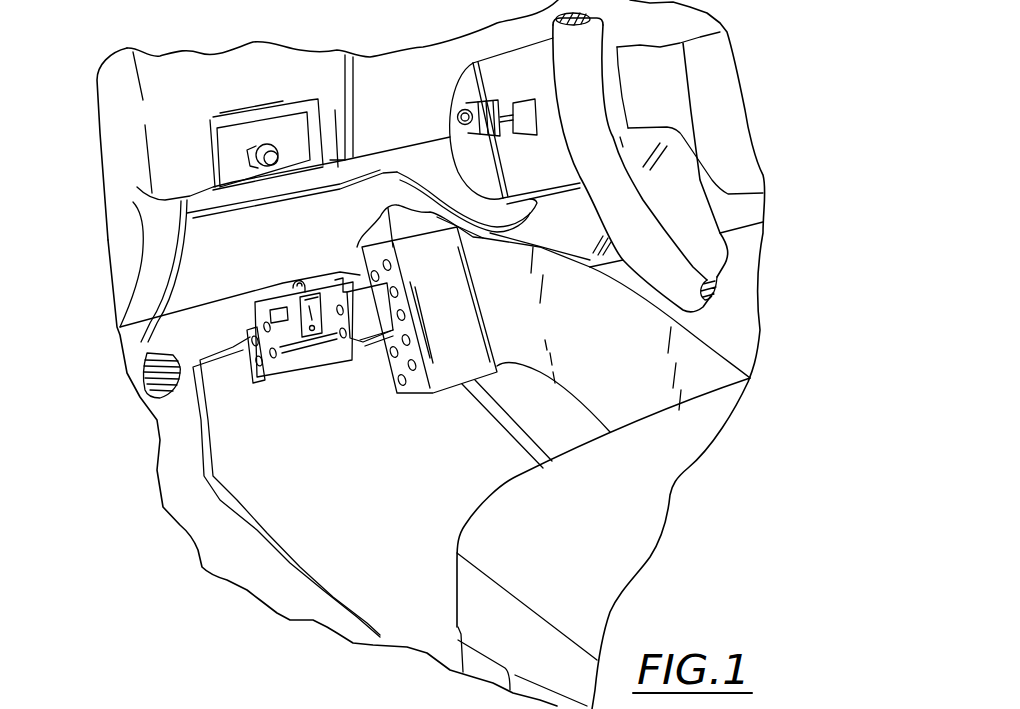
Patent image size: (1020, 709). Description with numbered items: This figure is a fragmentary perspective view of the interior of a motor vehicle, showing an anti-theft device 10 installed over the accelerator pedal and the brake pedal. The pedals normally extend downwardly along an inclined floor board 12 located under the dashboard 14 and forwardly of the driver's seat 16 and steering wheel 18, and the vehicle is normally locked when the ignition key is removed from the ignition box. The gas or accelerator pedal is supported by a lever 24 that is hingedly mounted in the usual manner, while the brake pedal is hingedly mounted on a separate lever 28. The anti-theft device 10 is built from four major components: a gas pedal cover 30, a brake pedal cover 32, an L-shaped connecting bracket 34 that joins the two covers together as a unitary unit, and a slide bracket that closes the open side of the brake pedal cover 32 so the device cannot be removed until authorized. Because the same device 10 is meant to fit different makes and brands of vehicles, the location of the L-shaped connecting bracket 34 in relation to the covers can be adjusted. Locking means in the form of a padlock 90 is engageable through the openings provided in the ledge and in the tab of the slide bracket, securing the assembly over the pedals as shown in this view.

The anti-theft device 10 is at (361, 397).
The inclined floor board 12 is at (202, 342).
The dashboard 14 is at (162, 172).
The driver's seat 16 is at (580, 557).
The steering wheel 18 is at (683, 292).
The lever 24 is at (398, 247).
The lever 28 is at (293, 288).
The gas pedal cover 30 is at (458, 338).
The brake pedal cover 32 is at (247, 357).
The L-shaped connecting bracket 34 is at (373, 322).
The padlock 90 is at (305, 330).